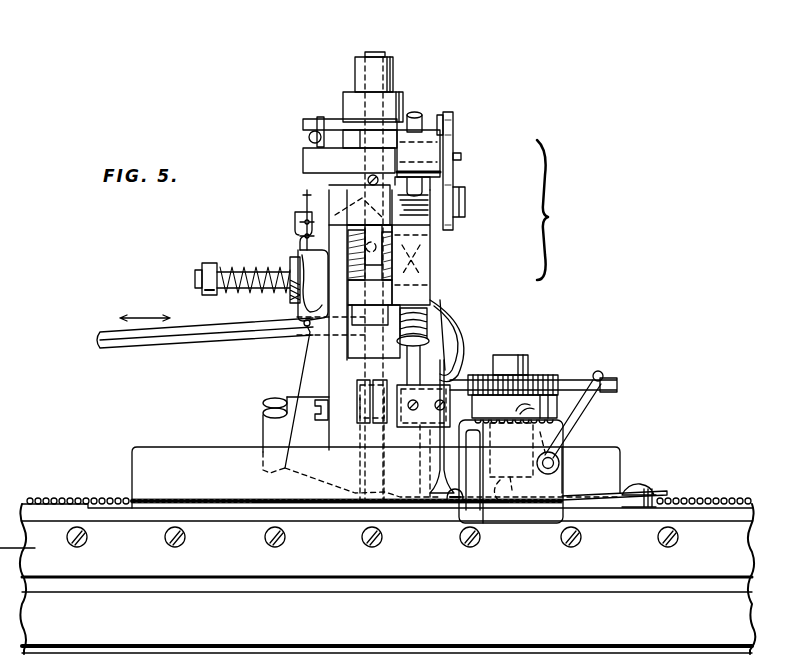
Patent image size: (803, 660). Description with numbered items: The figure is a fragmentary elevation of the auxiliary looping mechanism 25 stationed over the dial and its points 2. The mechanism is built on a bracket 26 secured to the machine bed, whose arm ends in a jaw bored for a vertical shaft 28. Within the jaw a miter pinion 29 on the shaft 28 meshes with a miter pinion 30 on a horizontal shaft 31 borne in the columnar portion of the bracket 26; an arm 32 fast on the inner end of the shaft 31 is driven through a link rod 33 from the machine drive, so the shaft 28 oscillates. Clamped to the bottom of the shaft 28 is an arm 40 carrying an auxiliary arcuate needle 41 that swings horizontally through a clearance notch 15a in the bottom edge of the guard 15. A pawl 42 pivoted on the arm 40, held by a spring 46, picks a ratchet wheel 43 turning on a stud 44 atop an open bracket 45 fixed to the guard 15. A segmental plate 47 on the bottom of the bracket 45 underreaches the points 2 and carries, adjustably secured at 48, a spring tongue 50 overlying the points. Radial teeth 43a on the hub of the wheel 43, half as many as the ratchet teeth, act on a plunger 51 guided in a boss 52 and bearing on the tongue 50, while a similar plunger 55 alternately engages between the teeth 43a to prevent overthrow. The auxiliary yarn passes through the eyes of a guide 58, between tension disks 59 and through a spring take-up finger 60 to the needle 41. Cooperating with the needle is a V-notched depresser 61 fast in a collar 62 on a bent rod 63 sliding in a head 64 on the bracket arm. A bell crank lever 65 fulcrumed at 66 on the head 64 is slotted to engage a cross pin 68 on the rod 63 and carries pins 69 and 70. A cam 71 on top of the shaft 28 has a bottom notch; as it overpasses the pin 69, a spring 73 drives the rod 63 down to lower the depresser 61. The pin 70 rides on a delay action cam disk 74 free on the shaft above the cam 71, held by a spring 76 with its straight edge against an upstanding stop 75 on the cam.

The dial points 2 is at (84, 497).
The guard 15 is at (179, 447).
The clearance notch 15a is at (465, 484).
The auxiliary mechanism 25 is at (558, 210).
The bracket 26 is at (337, 368).
The vertical shaft 28 is at (372, 52).
The miter pinion 29 is at (395, 272).
The miter pinion 30 is at (430, 228).
The horizontal shaft 31 is at (393, 252).
The arm 32 is at (450, 346).
The link rod 33 is at (160, 348).
The arm 40 is at (357, 412).
The auxiliary arcuate needle 41 is at (424, 490).
The pawl 42 is at (576, 379).
The ratchet wheel 43 is at (538, 375).
The radial teeth 43a is at (514, 409).
The stud 44 is at (514, 360).
The open bracket 45 is at (525, 513).
The spring 46 is at (601, 387).
The segmental plate 47 is at (317, 508).
The adjustable securing point 48 is at (641, 489).
The spring tongue 50 is at (588, 495).
The plunger 51 is at (493, 502).
The boss 52 is at (490, 455).
The plunger 55 is at (548, 447).
The guide 58 is at (306, 196).
The tension disks 59 is at (293, 257).
The spring take-up finger 60 is at (263, 436).
The depresser 61 is at (439, 472).
The collar 62 is at (430, 428).
The bent rod 63 is at (416, 112).
The head 64 is at (432, 286).
The bell crank lever 65 is at (453, 113).
The fulcrum 66 is at (466, 198).
The cross pin 68 is at (461, 156).
The pin 69 is at (453, 168).
The pin 70 is at (440, 118).
The cam 71 is at (303, 158).
The spring 73 is at (428, 320).
The delay action cam disk 74 is at (303, 123).
The stop 75 is at (320, 117).
The spring 76 is at (309, 136).